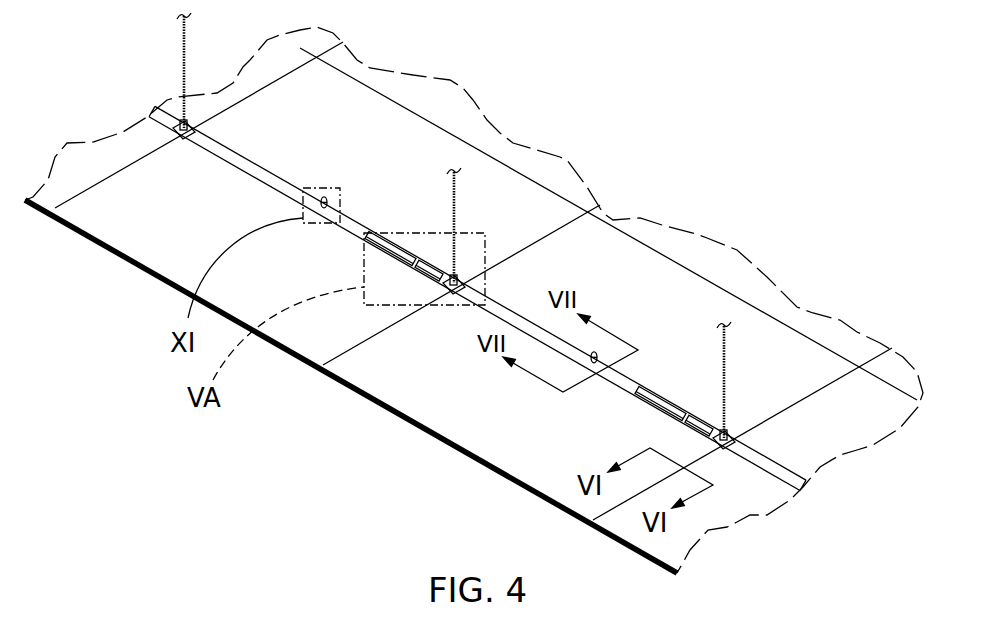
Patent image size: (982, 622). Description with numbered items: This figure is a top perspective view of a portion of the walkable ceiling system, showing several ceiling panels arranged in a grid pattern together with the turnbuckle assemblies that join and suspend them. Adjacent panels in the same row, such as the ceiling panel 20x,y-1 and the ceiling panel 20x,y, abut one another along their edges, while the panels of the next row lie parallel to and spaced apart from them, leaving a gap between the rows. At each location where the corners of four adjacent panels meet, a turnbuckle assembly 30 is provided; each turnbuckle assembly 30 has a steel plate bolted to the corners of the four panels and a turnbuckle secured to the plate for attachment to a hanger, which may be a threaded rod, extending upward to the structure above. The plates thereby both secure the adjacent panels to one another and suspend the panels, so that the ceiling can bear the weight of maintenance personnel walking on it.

The turnbuckle assembly 30 is at (207, 97).
The ceiling panel 20x,y-1 is at (155, 238).
The ceiling panel 20x,y is at (465, 423).